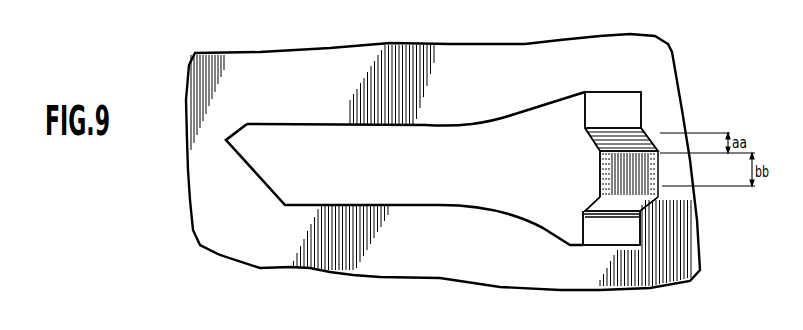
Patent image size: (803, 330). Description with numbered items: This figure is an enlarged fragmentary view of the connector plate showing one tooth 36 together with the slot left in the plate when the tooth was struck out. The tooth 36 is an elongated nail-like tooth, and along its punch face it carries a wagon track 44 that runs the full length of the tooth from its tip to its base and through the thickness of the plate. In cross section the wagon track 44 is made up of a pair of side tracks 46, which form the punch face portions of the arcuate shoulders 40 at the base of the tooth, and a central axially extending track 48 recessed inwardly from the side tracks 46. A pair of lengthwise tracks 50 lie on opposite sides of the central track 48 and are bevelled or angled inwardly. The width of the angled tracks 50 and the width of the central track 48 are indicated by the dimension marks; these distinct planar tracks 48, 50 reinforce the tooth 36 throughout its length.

The tooth 36 is at (655, 190).
The arcuate shoulder 40 is at (512, 116).
The wagon track 44 is at (590, 182).
The side track 46 is at (582, 98).
The central track 48 is at (598, 172).
The angled track 50 is at (586, 134).